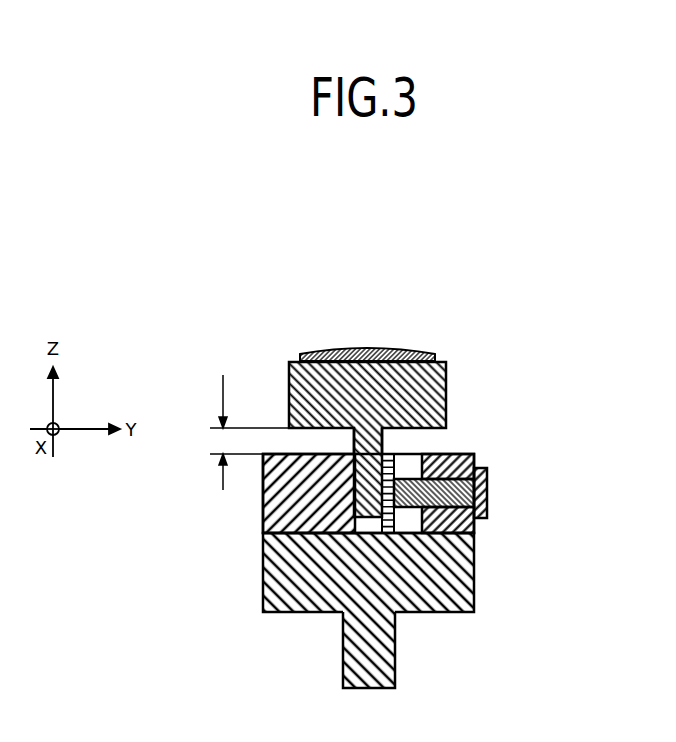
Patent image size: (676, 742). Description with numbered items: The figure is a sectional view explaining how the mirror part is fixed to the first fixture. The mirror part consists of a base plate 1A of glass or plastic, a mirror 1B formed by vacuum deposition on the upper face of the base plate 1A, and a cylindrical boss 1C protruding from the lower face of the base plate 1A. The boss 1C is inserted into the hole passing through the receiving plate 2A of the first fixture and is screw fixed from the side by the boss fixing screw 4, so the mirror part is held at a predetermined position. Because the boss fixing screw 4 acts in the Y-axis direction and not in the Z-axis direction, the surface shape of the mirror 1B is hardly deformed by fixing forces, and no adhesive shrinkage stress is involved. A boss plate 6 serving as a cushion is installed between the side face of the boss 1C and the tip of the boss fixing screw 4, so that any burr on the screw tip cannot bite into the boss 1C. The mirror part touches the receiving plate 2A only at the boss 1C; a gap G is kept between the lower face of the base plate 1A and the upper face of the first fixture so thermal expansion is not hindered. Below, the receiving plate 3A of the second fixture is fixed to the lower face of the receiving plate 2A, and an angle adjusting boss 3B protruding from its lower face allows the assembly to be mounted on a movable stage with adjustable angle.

The base plate 1A is at (447, 387).
The mirror 1B is at (328, 348).
The boss 1C is at (353, 442).
The receiving plate 2A is at (262, 508).
The receiving plate 3A is at (262, 573).
The angle adjusting boss 3B is at (343, 652).
The boss fixing screw 4 is at (487, 493).
The boss plate 6 is at (395, 461).
The gap G is at (238, 432).